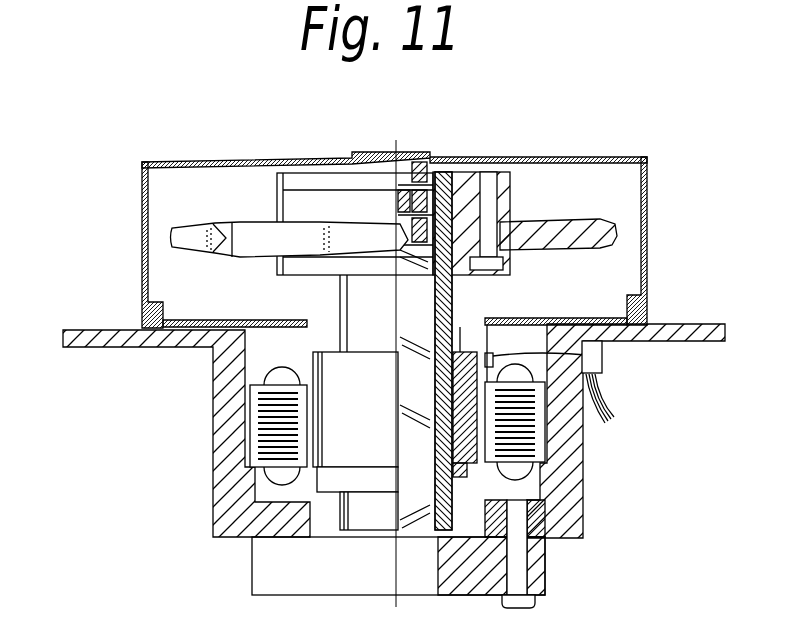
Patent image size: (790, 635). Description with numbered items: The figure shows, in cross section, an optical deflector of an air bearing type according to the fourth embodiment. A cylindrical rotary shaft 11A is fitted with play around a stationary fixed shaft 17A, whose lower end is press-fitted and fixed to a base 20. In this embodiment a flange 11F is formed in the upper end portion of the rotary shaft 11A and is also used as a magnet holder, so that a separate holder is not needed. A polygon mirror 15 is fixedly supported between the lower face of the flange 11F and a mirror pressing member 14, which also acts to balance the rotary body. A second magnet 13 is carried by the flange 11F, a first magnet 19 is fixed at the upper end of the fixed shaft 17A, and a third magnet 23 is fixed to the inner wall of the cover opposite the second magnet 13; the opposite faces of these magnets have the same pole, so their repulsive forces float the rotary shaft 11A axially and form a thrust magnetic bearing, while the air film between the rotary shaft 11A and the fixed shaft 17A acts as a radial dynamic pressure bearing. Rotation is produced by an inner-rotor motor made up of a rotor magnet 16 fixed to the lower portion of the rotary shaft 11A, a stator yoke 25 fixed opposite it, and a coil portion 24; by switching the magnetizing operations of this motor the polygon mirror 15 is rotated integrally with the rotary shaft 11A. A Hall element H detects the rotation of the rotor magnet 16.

The rotary shaft 11A is at (450, 300).
The flange 11F is at (290, 200).
The second magnet 13 is at (443, 185).
The mirror pressing member 14 is at (290, 267).
The polygon mirror 15 is at (565, 222).
The rotor magnet 16 is at (473, 443).
The fixed shaft 17A is at (530, 493).
The first magnet 19 is at (485, 220).
The base 20 is at (533, 578).
The third magnet 23 is at (416, 161).
The coil portion 24 is at (515, 472).
The stator yoke 25 is at (537, 418).
The Hall element H is at (602, 361).